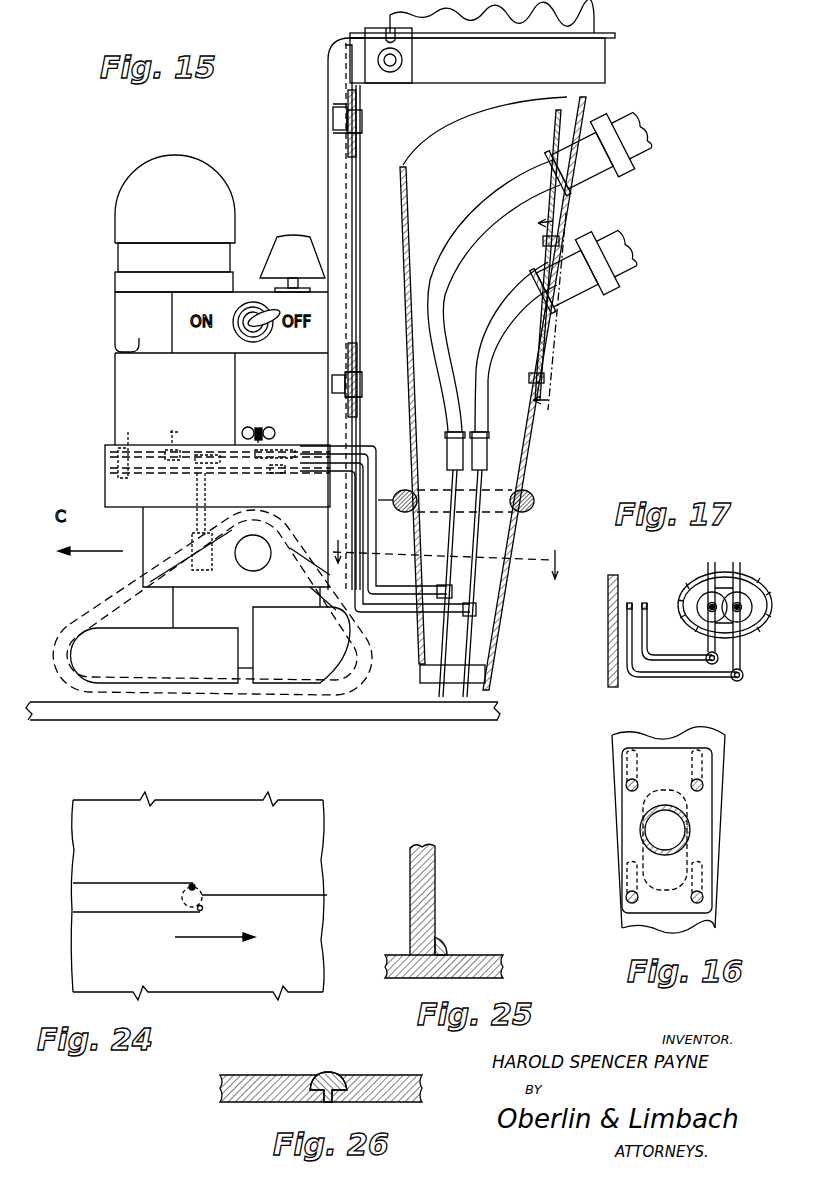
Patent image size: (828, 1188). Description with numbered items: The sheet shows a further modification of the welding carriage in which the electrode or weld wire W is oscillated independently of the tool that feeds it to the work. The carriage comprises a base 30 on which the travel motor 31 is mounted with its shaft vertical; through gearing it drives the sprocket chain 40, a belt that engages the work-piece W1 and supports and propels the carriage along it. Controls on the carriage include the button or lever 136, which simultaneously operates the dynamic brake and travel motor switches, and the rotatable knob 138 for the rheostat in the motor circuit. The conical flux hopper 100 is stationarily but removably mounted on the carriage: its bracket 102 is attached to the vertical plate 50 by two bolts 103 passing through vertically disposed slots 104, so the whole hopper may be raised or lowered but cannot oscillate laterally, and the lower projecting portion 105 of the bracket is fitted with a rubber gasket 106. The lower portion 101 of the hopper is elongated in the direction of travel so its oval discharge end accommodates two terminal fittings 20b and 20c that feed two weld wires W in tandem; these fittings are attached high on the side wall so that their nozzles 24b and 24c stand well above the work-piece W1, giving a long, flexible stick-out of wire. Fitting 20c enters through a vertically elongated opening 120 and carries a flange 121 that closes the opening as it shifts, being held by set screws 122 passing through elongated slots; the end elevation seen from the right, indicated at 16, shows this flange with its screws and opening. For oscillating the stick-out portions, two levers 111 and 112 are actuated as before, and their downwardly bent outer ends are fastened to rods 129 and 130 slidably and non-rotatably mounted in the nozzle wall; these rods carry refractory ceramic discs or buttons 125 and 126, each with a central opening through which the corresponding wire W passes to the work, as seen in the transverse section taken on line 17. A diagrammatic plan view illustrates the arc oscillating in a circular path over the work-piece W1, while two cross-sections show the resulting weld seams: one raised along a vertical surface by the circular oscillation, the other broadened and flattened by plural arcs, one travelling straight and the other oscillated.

In FIG. 15, the flux hopper 100 is at (594, 16).
In FIG. 15, the vertical plate 50 is at (330, 180).
In FIG. 17, the vertical plate 50 is at (608, 616).
In FIG. 15, the bracket 102 is at (359, 285).
In FIG. 15, the bolts 103 is at (333, 118).
In FIG. 15, the slots 104 is at (333, 143).
In FIG. 15, the motor 31 is at (120, 255).
In FIG. 15, the button or lever 136 is at (265, 328).
In FIG. 15, the rotatable knob 138 is at (284, 248).
In FIG. 15, the base 30 is at (105, 462).
In FIG. 15, the sprocket chain 40 is at (62, 632).
In FIG. 15, the base workpiece W1 is at (47, 700).
In FIG. 24, the base workpiece W1 is at (73, 850).
In FIG. 15, the lower portion of hopper 101 is at (492, 625).
In FIG. 17, the lower portion of hopper 101 is at (752, 578).
In FIG. 15, the terminal fitting 20b is at (446, 283).
In FIG. 15, the terminal fitting 20c is at (479, 343).
In FIG. 15, the nozzle 24b is at (448, 450).
In FIG. 15, the nozzle 24c is at (483, 458).
In FIG. 15, the weld wire W is at (476, 543).
In FIG. 17, the weld wire W is at (708, 605).
In FIG. 24, the weld wire W is at (195, 886).
In FIG. 15, the lower projecting portion of bracket 105 is at (535, 502).
In FIG. 15, the rubber gasket 106 is at (529, 490).
In FIG. 15, the lever 111 is at (378, 528).
In FIG. 17, the lever 111 is at (647, 637).
In FIG. 15, the lever 112 is at (366, 565).
In FIG. 17, the lever 112 is at (627, 638).
In FIG. 15, the disc or button 125 is at (452, 588).
In FIG. 17, the disc or button 125 is at (706, 606).
In FIG. 15, the disc or button 126 is at (477, 607).
In FIG. 17, the disc or button 126 is at (743, 614).
In FIG. 15, the section line 17- 17 is at (447, 570).
In FIG. 15, the section line 16- 16 is at (539, 311).
In FIG. 15, the opening 120 is at (553, 248).
In FIG. 16, the opening 120 is at (690, 853).
In FIG. 15, the flange 121 is at (541, 357).
In FIG. 16, the flange 121 is at (712, 868).
In FIG. 15, the set screws 122 is at (562, 238).
In FIG. 16, the set screws 122 is at (627, 784).
In FIG. 17, the rod 129 is at (709, 562).
In FIG. 17, the rod 130 is at (738, 562).